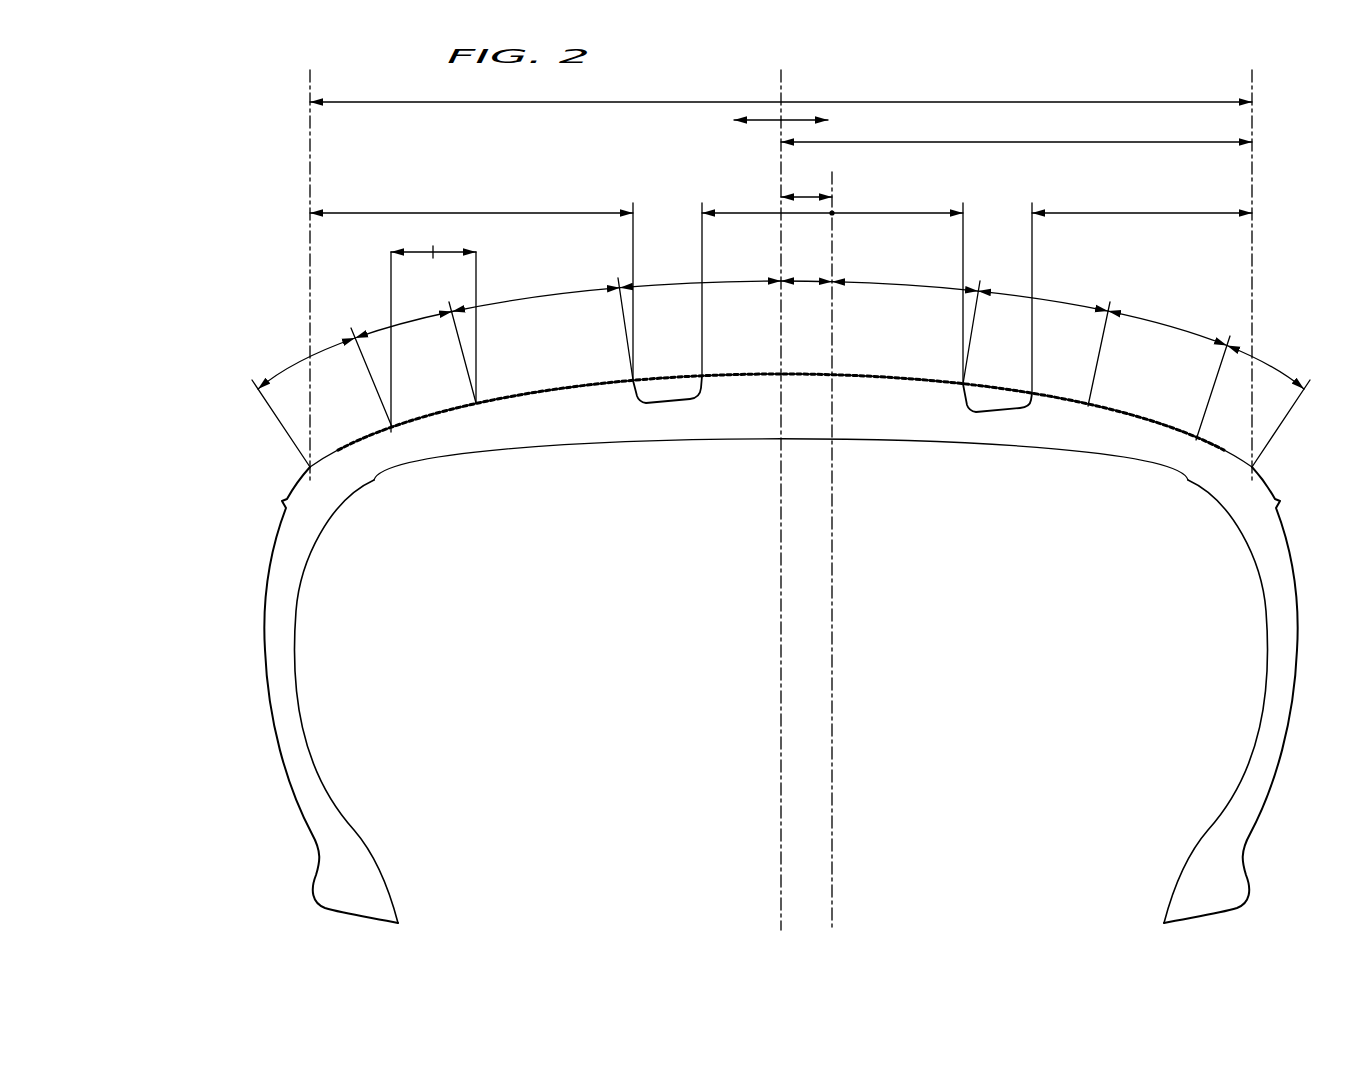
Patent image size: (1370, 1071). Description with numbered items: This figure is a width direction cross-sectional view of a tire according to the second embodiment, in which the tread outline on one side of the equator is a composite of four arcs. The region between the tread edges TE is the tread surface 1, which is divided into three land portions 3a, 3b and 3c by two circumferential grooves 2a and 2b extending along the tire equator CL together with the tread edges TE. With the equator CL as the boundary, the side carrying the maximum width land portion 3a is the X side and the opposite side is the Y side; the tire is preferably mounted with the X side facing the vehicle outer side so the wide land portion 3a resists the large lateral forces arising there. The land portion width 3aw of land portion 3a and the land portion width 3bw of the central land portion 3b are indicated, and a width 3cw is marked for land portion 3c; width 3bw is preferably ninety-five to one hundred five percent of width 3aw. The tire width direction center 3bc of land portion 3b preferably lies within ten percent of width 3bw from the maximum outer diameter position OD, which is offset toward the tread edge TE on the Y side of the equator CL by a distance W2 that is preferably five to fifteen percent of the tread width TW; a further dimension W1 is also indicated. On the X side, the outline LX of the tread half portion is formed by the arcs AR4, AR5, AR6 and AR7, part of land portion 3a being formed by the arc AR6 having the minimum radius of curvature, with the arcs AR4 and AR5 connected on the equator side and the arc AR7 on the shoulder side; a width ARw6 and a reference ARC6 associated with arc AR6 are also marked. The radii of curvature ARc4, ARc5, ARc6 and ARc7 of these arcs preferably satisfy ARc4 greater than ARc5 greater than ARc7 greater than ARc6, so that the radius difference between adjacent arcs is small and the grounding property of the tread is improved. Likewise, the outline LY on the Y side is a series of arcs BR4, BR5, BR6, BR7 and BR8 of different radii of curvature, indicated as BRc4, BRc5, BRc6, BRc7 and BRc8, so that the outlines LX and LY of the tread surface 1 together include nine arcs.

The tread surface 1 is at (260, 242).
The circumferential groove 2a is at (670, 395).
The circumferential groove 2b is at (1000, 402).
The maximum width land portion 3a is at (523, 393).
The central land portion 3b is at (860, 376).
The land portion 3c is at (1124, 411).
The tire width direction center of the central land portion 3bc is at (834, 214).
The outline of the tread half portion on the X side LX is at (339, 446).
The outline on the Y side LY is at (1224, 446).
The tread edge TE is at (780, 263).
The tire equator CL is at (781, 488).
The maximum outer diameter position OD is at (831, 538).
The tread width TW is at (781, 90).
The X side X is at (748, 122).
The Y side Y is at (812, 122).
The distance from center line to tread edge W1 is at (1016, 129).
The tire width direction distance W2 is at (806, 185).
The land portion width of the maximum width land portion 3aw is at (471, 284).
The land portion width of the central land portion 3bw is at (832, 286).
The width of third land portion 3cw is at (1142, 290).
The width of arc region AR6 ARw6 is at (432, 329).
The center of arc region AR6 ARC6 is at (433, 252).
The arc AR4 is at (700, 273).
The arc AR5 is at (542, 326).
The arc AR6 is at (415, 351).
The arc AR7 is at (322, 397).
The arc BR4 is at (806, 266).
The arc BR5 is at (906, 321).
The arc BR6 is at (1044, 342).
The arc BR7 is at (1169, 370).
The arc BR8 is at (1268, 404).
The radius of curvature of arc AR4 ARc4 is at (748, 378).
The radius of curvature of arc AR5 ARc5 is at (552, 393).
The radius of curvature of arc AR6 ARc6 is at (425, 420).
The radius of curvature of arc AR7 ARc7 is at (340, 456).
The curvature center of arc BR4 BRc4 is at (802, 378).
The curvature center of arc BR5 BRc5 is at (921, 383).
The curvature center of arc BR6 BRc6 is at (1042, 398).
The curvature center of arc BR7 BRc7 is at (1129, 417).
The curvature center of arc BR8 BRc8 is at (1220, 452).